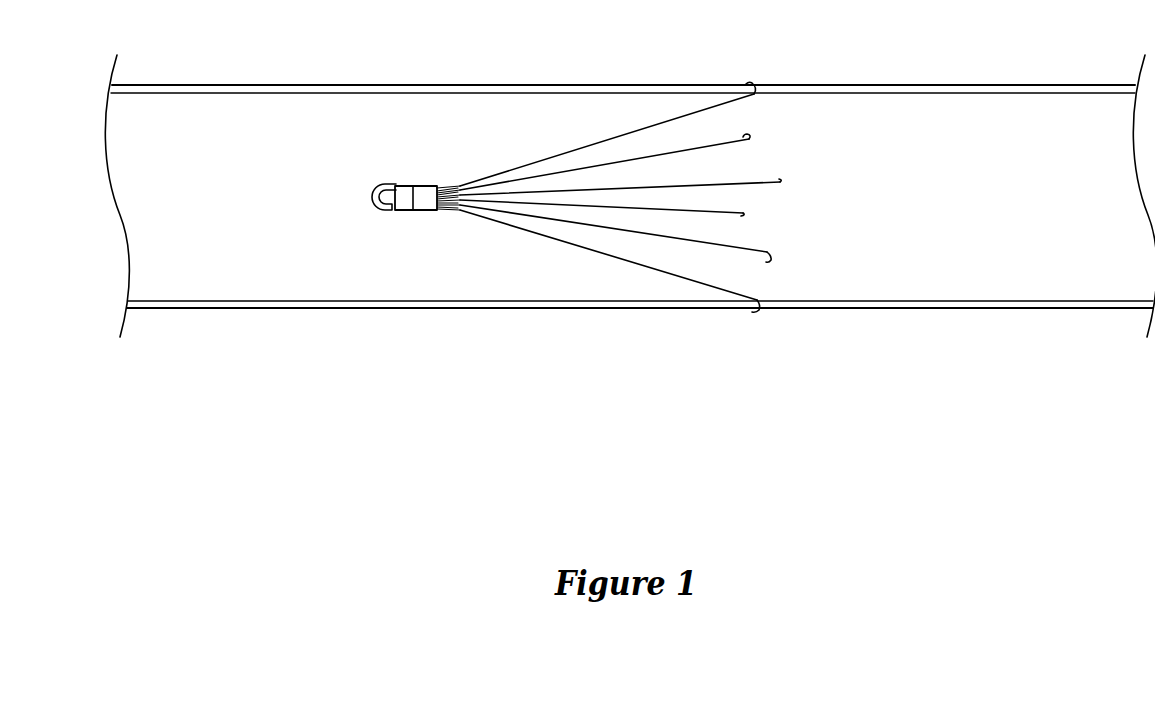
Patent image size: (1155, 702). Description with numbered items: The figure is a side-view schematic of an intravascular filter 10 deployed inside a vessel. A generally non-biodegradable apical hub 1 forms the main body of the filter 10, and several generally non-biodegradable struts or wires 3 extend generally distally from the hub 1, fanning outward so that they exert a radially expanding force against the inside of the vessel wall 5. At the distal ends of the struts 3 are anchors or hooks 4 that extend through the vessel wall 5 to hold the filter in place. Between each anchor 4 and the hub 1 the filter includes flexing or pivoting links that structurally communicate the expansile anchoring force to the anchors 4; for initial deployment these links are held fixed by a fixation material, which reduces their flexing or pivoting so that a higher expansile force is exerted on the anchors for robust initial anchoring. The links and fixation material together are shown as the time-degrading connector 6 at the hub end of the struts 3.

The apical hub 1 is at (359, 158).
The struts 3 is at (510, 147).
The anchors 4 is at (757, 135).
The vessel wall 5 is at (925, 86).
The time-degrading connector 6 is at (436, 230).
The intravascular filter 10 is at (337, 246).